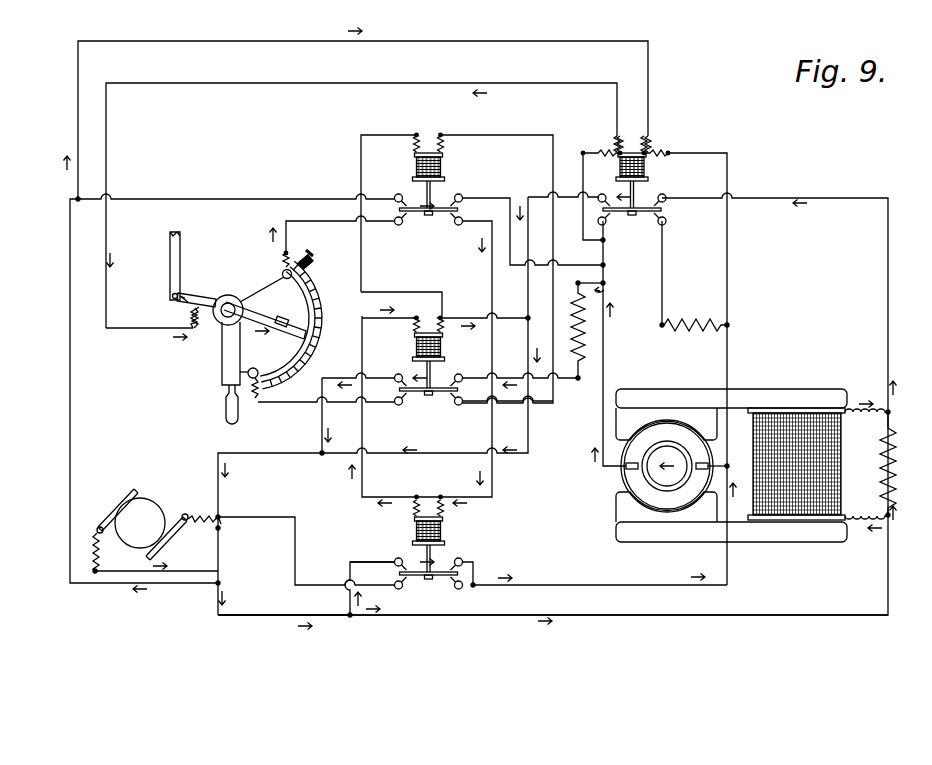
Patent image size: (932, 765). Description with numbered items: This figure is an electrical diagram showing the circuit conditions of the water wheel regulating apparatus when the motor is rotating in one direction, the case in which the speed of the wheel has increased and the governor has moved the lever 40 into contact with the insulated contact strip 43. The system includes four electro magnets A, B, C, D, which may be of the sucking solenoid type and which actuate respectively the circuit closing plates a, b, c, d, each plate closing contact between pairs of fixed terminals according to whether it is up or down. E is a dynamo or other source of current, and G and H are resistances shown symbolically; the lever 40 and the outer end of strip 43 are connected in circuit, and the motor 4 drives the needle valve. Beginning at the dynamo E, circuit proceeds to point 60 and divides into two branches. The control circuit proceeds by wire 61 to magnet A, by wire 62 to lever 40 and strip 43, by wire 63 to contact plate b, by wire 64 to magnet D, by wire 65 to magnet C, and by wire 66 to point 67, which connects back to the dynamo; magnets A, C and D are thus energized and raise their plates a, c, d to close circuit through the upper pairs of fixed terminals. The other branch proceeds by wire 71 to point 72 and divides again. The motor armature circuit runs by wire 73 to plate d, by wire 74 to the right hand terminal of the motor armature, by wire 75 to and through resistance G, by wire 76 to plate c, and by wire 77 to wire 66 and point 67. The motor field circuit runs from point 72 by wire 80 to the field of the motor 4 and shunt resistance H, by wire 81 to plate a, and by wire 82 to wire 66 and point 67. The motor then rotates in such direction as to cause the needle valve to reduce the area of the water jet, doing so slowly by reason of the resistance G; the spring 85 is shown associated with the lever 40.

The wire 61 is at (344, 139).
The wire 62 is at (363, 200).
The wire 63 is at (332, 247).
The wire 64 is at (533, 246).
The wire 65 is at (421, 359).
The wire 66 is at (399, 455).
The point 67 is at (305, 536).
The wire 71 is at (284, 610).
The point 72 is at (368, 603).
The wire 73 is at (372, 547).
The wire 74 is at (594, 572).
The wire 75 is at (614, 343).
The wire 76 is at (581, 382).
The wire 77 is at (323, 403).
The wire 80 is at (553, 602).
The wire 81 is at (557, 409).
The wire 82 is at (460, 323).
The spring 85 is at (172, 310).
The lever 40 is at (246, 328).
The insulated contact strip 43 is at (312, 268).
The point 60 is at (232, 393).
The motor 4 is at (753, 452).
The electro magnet A is at (654, 360).
The electro magnet B is at (457, 268).
The electro magnet C is at (445, 359).
The electro magnet D is at (422, 542).
The dynamo E is at (157, 523).
The resistance G is at (566, 330).
The shunt resistance H is at (778, 370).
The circuit closing plate a is at (624, 218).
The circuit closing plate b is at (432, 222).
The circuit closing plate c is at (432, 402).
The circuit closing plate d is at (432, 586).